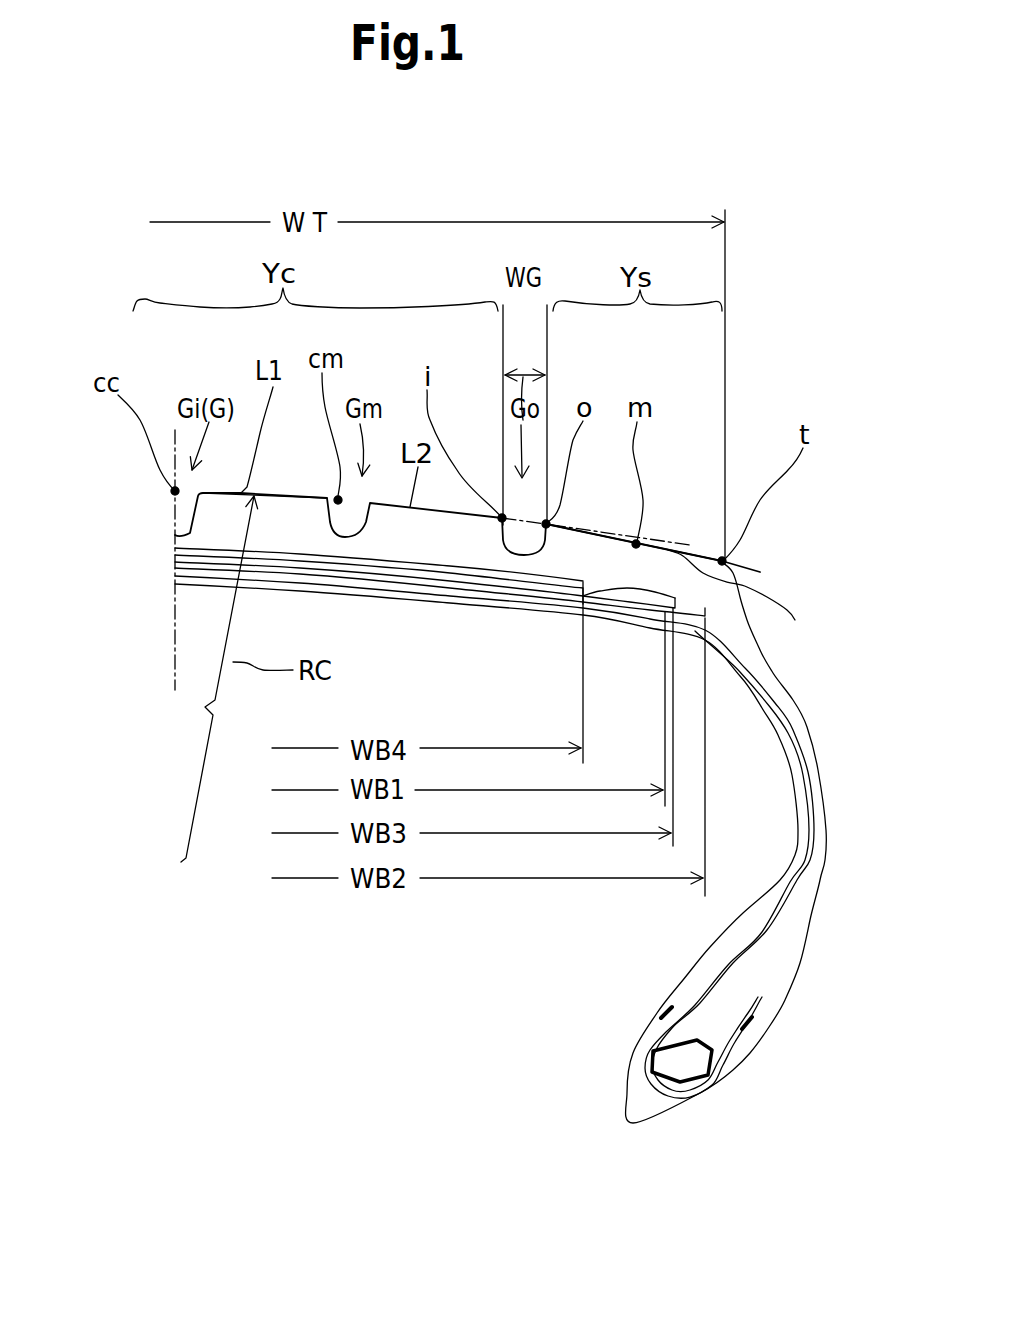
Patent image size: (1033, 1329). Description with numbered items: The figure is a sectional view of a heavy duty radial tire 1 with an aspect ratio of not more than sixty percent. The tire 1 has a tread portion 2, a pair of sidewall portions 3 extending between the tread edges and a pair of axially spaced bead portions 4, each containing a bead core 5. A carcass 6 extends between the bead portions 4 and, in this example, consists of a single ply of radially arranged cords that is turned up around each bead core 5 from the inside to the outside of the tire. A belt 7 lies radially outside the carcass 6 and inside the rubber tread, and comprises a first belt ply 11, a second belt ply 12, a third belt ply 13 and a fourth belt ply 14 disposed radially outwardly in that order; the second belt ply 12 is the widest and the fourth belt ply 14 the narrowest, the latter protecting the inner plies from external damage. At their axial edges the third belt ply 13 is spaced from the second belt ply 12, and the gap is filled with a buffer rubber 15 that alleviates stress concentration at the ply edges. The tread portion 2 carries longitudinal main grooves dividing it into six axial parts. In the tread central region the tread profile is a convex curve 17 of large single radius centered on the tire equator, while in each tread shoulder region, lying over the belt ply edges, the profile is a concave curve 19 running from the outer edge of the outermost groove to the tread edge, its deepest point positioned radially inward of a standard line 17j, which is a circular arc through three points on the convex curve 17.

The heavy duty radial tire 1 is at (542, 681).
The tread portion 2 is at (772, 399).
The sidewall portion 3 is at (834, 741).
The bead portion 4 is at (630, 1069).
The bead core 5 is at (675, 1062).
The carcass 6 is at (703, 985).
The belt 7 is at (367, 581).
The first belt ply 11 is at (393, 603).
The second belt ply 12 is at (175, 565).
The third belt ply 13 is at (175, 558).
The fourth belt ply 14 is at (175, 550).
The buffer rubber 15 is at (648, 603).
The convex curve 17 is at (277, 490).
The standard line 17j is at (660, 533).
The concave curve 19 is at (738, 599).